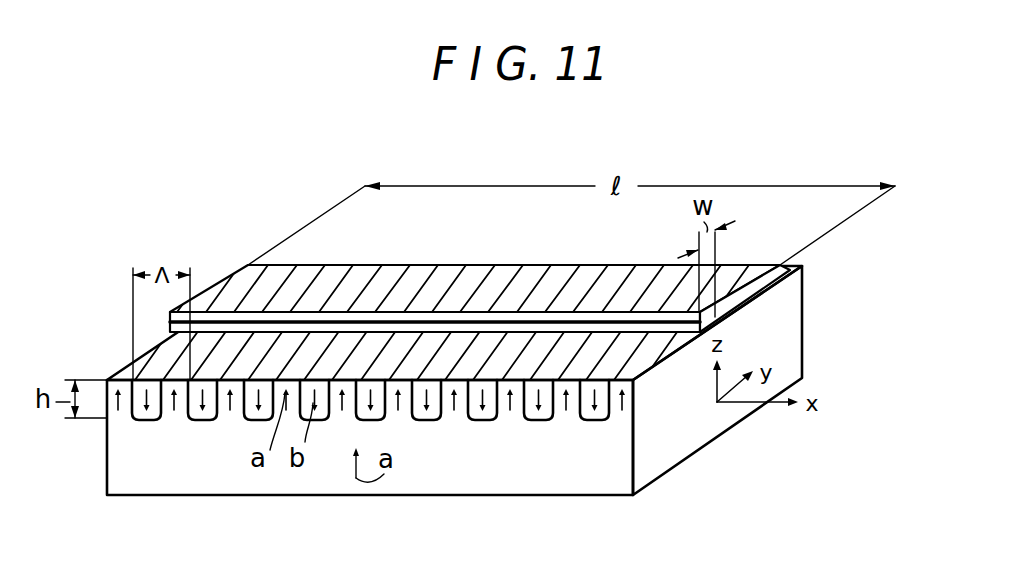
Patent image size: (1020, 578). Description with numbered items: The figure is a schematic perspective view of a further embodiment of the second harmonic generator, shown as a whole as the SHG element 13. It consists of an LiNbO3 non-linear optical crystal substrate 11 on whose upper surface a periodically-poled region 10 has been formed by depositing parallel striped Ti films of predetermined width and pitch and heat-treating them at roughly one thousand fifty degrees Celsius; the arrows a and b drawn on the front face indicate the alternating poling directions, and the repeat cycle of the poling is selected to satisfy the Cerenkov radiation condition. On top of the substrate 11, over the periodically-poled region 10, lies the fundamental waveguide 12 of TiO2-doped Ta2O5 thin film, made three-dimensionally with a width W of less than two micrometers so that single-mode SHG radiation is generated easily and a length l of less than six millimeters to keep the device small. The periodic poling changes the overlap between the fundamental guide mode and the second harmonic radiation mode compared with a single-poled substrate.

The periodically-poled region 10 is at (200, 412).
The non-linear optical crystal substrate 11 is at (688, 452).
The fundamental waveguide 12 is at (518, 312).
The SHG element 13 is at (479, 375).